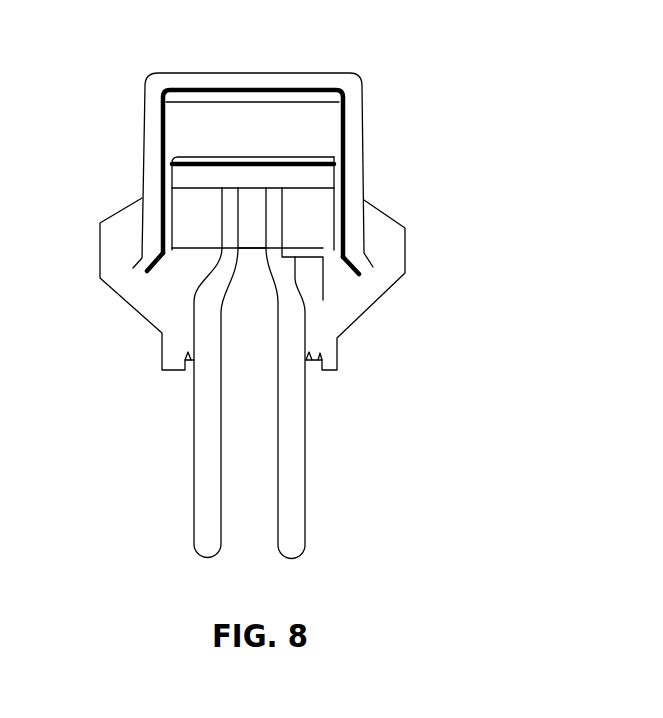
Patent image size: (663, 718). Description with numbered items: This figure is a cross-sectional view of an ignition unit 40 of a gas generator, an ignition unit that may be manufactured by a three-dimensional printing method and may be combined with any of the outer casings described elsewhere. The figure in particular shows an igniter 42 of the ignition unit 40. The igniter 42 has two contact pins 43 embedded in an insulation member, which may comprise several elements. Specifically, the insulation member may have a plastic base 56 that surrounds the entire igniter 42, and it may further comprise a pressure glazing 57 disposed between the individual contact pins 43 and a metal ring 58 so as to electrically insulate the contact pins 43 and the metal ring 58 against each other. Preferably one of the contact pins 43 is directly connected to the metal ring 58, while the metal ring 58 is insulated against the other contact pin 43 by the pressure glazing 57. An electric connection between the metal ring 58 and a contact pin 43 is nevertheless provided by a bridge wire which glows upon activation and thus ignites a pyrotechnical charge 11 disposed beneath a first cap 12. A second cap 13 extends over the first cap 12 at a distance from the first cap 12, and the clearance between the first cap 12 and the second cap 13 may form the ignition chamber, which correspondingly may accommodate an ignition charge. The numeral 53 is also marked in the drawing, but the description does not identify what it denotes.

The ignition unit 40 is at (476, 113).
The second cap 13 is at (315, 76).
The first cap 12 is at (330, 160).
The pyrotechnical charge 11 is at (313, 180).
The mounting portion 53 is at (272, 188).
The plastic base 56 is at (405, 248).
The pressure glazing 57 is at (238, 230).
The metal ring 58 is at (190, 233).
The igniter 42 is at (212, 472).
The contact pins 43 is at (298, 443).